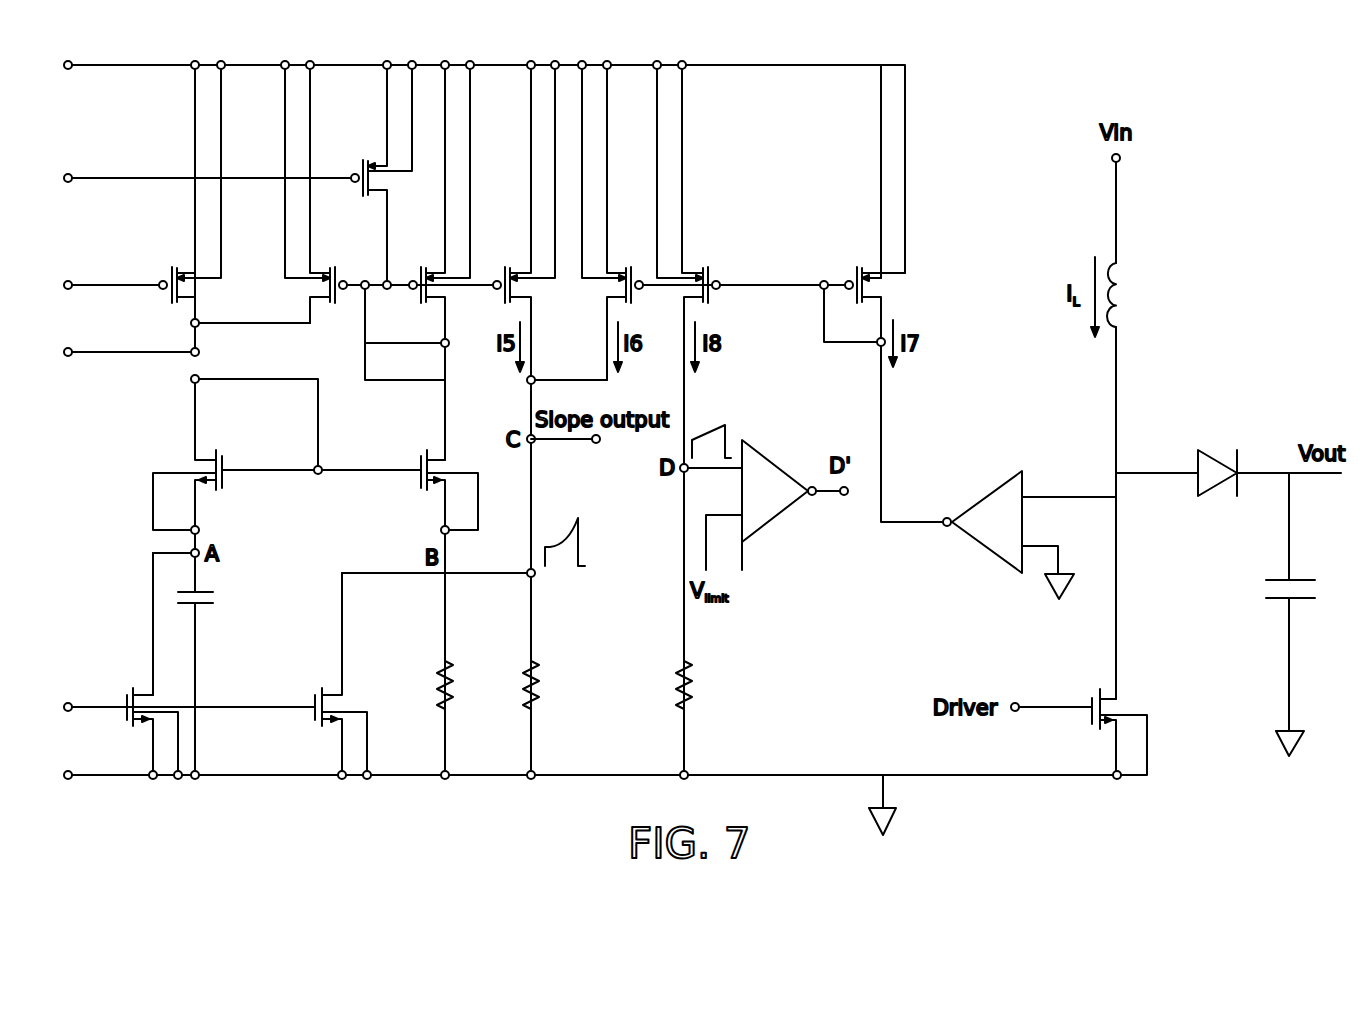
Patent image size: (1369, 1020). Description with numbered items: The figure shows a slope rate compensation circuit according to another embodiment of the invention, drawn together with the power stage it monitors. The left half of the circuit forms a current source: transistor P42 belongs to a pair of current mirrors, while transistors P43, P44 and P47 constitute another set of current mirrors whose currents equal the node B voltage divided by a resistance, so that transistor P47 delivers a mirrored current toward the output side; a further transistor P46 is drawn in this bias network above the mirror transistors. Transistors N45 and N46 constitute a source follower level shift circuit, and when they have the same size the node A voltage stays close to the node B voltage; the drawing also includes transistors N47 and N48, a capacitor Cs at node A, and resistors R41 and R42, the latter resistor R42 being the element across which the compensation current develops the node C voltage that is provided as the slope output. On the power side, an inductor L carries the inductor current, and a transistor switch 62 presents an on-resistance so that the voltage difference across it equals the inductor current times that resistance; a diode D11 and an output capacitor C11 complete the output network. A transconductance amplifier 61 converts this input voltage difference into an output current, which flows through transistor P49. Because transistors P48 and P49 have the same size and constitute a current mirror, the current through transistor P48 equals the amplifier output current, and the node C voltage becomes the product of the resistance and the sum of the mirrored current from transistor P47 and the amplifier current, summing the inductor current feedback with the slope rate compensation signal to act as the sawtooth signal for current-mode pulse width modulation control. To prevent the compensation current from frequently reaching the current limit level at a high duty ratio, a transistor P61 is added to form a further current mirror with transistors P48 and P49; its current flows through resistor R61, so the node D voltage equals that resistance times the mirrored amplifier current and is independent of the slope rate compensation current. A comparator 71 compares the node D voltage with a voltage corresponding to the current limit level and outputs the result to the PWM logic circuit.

The transistor P42 is at (183, 194).
The transistor P43 is at (389, 194).
The transistor P44 is at (433, 262).
The PMOS transistor P46 is at (376, 175).
The transistor P47 is at (518, 420).
The transistor P48 is at (713, 222).
The transistor P61 is at (696, 420).
The transistor P49 is at (883, 378).
The transistor N45 is at (198, 485).
The transistor N46 is at (438, 559).
The NMOS transistor N47 is at (141, 664).
The NMOS transistor N48 is at (330, 674).
The slope capacitor Cs is at (214, 664).
The resistor R41 is at (424, 685).
The resistor R42 is at (509, 685).
The resistor R61 is at (661, 685).
The comparator 71 is at (776, 462).
The transconductance amplifier 61 is at (978, 549).
The transistor switch 62 is at (1142, 705).
The inductor L is at (1128, 295).
The diode D11 is at (1219, 453).
The output capacitor C11 is at (1314, 591).